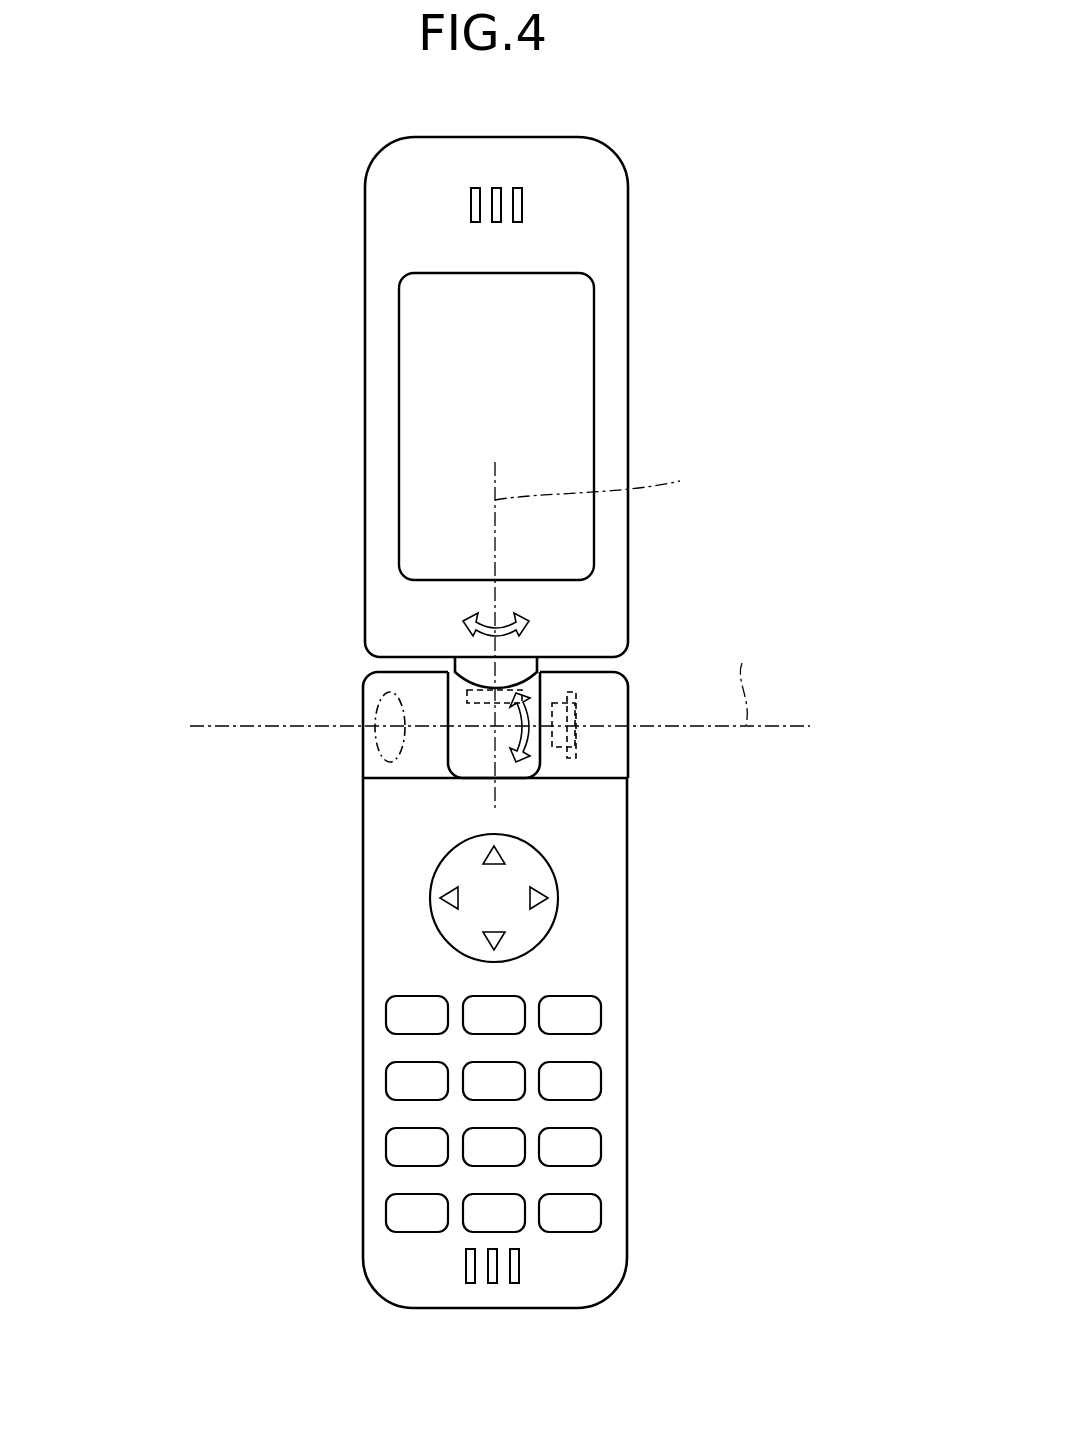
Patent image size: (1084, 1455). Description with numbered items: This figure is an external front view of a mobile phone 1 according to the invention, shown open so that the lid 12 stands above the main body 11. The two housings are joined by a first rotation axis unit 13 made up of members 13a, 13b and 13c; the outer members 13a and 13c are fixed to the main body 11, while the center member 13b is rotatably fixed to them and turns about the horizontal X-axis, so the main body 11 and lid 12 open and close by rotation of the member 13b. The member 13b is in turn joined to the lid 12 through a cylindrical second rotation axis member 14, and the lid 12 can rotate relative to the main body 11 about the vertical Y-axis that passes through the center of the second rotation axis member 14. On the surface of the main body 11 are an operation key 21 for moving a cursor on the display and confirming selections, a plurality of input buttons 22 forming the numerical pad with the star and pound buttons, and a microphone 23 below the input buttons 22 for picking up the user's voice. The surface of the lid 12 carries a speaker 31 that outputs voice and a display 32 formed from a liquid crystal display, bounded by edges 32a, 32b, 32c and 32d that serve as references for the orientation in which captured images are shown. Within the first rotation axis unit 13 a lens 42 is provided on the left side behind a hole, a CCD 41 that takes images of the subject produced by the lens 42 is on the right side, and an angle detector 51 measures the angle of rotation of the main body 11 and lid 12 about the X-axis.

The mobile phone 1 is at (500, 749).
The main body 11 is at (627, 1120).
The lid 12 is at (365, 353).
The first rotation axis unit 13 is at (486, 721).
The member 13a is at (373, 765).
The member 13b is at (543, 672).
The member 13c is at (612, 760).
The second rotation axis member 14 is at (477, 670).
The operation key 21 is at (436, 925).
The input buttons 22 is at (338, 997).
The microphone 23 is at (519, 1265).
The speaker 31 is at (522, 203).
The display 32 is at (486, 410).
The edge 32a is at (542, 272).
The edge 32b is at (594, 412).
The edge 32c is at (437, 578).
The edge 32d is at (399, 445).
The CCD 41 is at (575, 712).
The lens 42 is at (383, 712).
The angle detector 51 is at (505, 683).